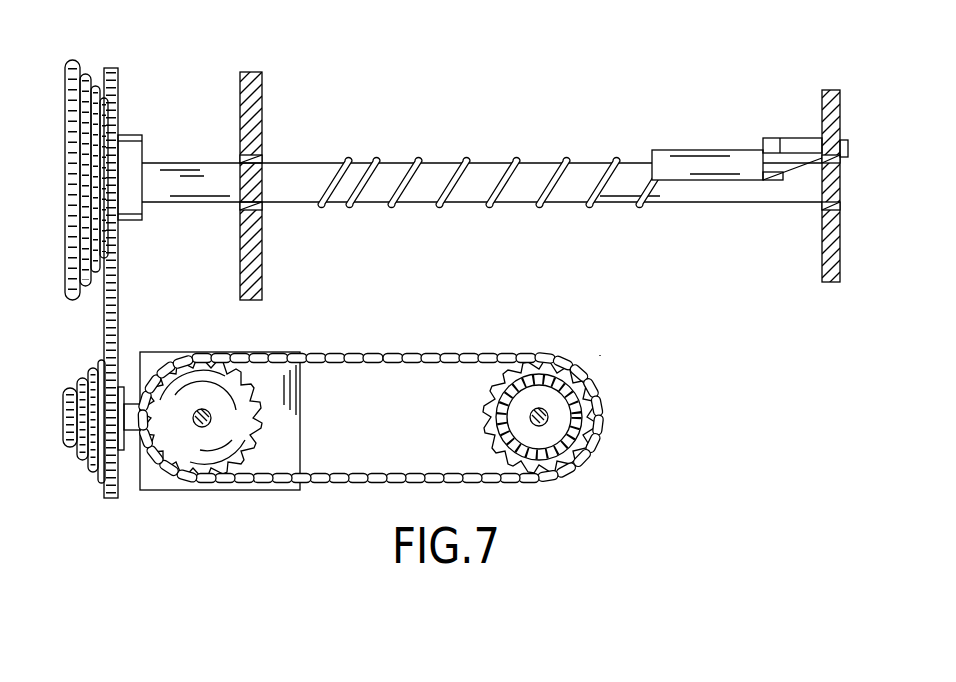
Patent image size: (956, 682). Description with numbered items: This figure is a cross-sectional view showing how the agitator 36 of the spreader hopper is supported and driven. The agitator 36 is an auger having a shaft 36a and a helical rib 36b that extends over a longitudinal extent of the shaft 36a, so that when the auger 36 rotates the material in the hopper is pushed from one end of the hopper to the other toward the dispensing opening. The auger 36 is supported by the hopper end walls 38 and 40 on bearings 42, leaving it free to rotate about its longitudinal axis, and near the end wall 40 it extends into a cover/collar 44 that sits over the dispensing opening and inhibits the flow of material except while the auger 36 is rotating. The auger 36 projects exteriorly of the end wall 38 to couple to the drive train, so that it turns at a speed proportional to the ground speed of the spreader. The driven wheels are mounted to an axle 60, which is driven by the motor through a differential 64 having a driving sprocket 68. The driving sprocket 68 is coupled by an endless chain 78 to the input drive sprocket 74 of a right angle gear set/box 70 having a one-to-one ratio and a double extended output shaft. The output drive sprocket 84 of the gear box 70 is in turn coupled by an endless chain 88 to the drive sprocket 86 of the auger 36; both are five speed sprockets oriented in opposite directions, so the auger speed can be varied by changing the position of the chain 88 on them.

The agitator 36 is at (300, 172).
The shaft 36a is at (487, 175).
The helical rib 36b is at (425, 162).
The end wall 38 is at (263, 98).
The end wall 40 is at (840, 248).
The bearings 42 is at (262, 212).
The cover/collar 44 is at (697, 163).
The axle 60 is at (588, 399).
The differential 64 is at (585, 366).
The driving sprocket 68 is at (560, 353).
The gear set/box 70 is at (300, 440).
The input drive sprocket 74 is at (237, 397).
The endless chain 78 is at (440, 357).
The output drive sprocket 84 is at (80, 477).
The drive sprocket 86 is at (110, 96).
The endless chain 88 is at (118, 323).